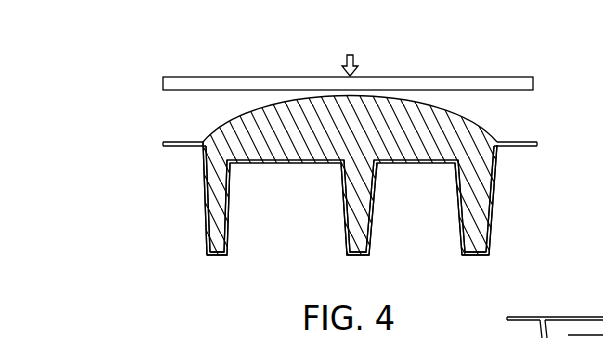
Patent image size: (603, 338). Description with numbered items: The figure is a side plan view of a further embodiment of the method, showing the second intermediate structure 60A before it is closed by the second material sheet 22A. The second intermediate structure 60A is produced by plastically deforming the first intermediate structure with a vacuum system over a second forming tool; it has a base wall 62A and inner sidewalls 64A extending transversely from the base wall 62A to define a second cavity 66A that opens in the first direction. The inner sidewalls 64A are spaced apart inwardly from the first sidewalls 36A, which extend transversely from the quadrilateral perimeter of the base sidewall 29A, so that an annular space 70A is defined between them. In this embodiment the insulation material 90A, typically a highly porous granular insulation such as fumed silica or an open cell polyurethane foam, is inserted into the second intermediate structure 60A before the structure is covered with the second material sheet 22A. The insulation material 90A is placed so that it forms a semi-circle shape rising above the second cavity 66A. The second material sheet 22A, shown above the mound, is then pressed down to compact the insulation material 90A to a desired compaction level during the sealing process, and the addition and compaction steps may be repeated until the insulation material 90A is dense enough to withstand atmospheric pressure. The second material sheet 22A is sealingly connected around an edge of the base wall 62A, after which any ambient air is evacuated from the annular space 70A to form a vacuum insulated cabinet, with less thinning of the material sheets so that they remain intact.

The base sidewall 29A is at (370, 138).
The second material sheet 22A is at (490, 77).
The insulation material 90A is at (457, 137).
The second intermediate structure 60A is at (200, 188).
The second cavity 66A is at (203, 139).
The annular space 70A is at (203, 177).
The sidewalls 36A is at (207, 237).
The inner sidewalls 64A is at (204, 138).
The base wall 62A is at (290, 164).